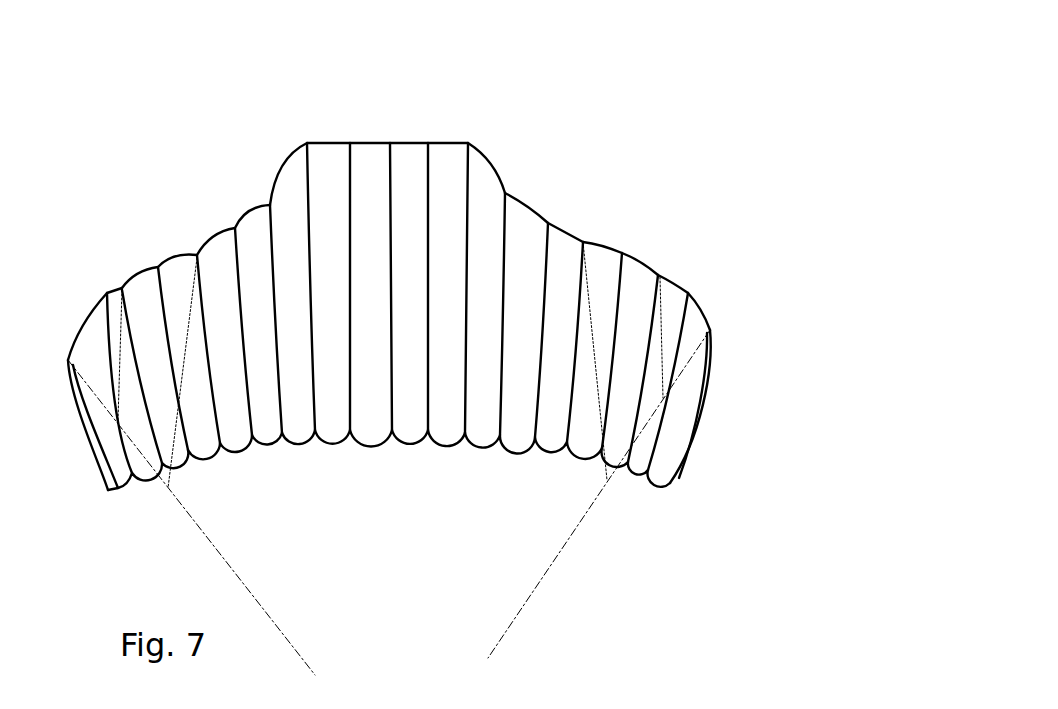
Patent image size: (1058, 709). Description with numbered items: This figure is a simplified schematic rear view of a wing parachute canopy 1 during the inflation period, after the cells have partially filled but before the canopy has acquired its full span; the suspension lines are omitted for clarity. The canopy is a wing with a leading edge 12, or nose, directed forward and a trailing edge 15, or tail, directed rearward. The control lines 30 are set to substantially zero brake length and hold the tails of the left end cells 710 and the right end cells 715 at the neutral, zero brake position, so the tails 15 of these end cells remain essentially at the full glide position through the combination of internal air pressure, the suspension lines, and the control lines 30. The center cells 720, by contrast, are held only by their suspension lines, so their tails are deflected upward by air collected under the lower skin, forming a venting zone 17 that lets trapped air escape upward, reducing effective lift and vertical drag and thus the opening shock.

The canopy 1 is at (170, 165).
The venting zone 17 is at (410, 136).
The trailing edge 15 is at (550, 207).
The left end cells 710 is at (84, 328).
The right end cells 715 is at (688, 295).
The leading edge 12 is at (228, 447).
The center cells 720 is at (448, 447).
The control lines 30 is at (170, 490).